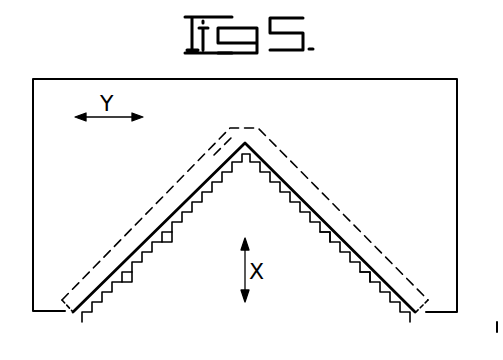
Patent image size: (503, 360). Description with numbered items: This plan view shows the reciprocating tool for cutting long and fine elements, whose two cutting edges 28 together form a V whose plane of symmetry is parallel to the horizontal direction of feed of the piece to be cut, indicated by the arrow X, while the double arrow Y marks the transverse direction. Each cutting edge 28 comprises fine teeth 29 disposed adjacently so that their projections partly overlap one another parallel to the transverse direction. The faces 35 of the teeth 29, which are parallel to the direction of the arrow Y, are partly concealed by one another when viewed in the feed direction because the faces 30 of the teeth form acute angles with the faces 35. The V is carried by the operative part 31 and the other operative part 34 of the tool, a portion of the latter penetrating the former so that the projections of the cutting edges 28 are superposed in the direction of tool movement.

The cutting edge 28 is at (98, 315).
The tooth 29 is at (135, 283).
The face of tooth 30 is at (155, 257).
The operative part 31 is at (80, 308).
The other operative part 34 is at (412, 320).
The face of tooth 35 is at (172, 236).